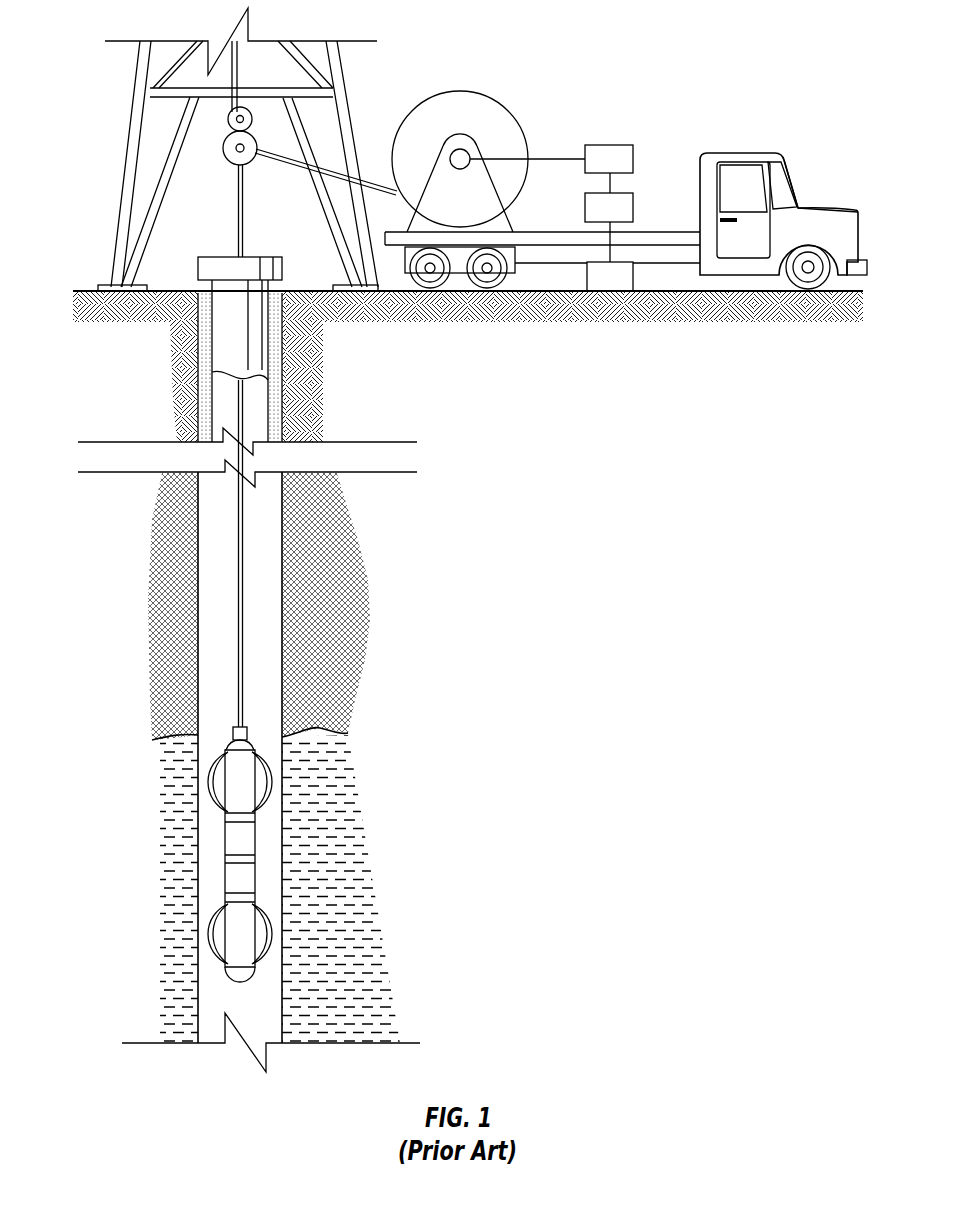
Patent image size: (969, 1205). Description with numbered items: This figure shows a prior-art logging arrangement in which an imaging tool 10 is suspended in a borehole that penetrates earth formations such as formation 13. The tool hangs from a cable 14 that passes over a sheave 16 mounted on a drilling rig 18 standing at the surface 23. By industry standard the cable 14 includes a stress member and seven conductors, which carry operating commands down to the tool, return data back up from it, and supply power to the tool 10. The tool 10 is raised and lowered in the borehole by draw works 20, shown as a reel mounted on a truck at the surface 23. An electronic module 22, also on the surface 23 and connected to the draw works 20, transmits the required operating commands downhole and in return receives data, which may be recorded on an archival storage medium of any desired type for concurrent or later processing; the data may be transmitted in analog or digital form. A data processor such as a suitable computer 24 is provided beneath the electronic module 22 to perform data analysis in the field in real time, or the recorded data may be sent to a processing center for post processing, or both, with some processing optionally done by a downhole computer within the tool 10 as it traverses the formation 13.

The imaging tool 10 is at (260, 845).
The earth formation 13 is at (384, 590).
The cable 14 is at (236, 232).
The sheave 16 is at (222, 149).
The drilling rig 18 is at (135, 86).
The draw works 20 is at (459, 91).
The electronic module 22 is at (624, 145).
The surface 23 is at (88, 291).
The computer 24 is at (623, 193).